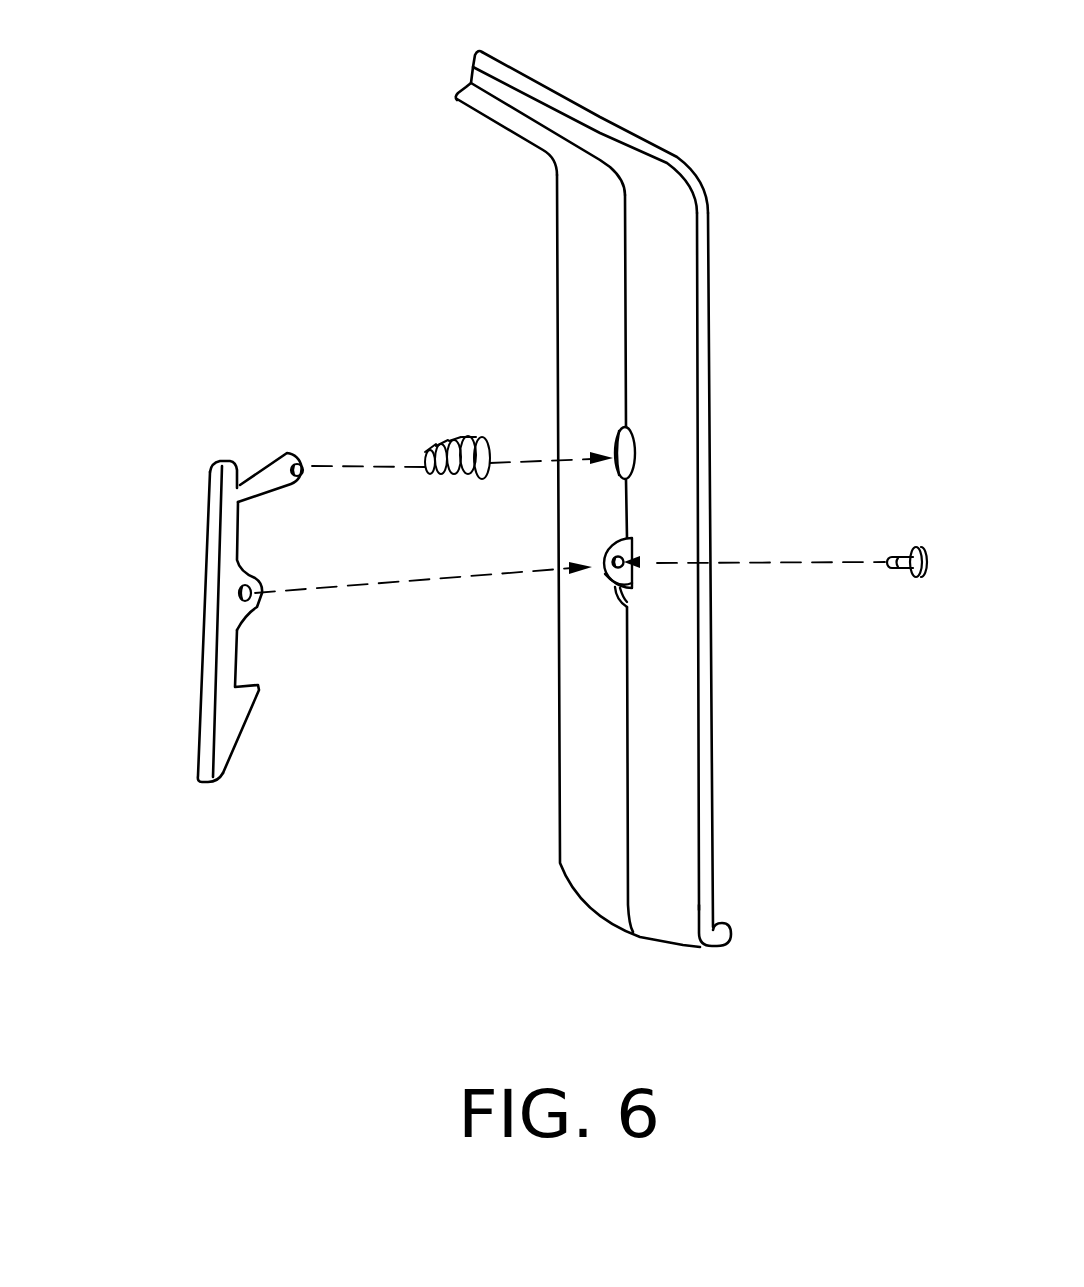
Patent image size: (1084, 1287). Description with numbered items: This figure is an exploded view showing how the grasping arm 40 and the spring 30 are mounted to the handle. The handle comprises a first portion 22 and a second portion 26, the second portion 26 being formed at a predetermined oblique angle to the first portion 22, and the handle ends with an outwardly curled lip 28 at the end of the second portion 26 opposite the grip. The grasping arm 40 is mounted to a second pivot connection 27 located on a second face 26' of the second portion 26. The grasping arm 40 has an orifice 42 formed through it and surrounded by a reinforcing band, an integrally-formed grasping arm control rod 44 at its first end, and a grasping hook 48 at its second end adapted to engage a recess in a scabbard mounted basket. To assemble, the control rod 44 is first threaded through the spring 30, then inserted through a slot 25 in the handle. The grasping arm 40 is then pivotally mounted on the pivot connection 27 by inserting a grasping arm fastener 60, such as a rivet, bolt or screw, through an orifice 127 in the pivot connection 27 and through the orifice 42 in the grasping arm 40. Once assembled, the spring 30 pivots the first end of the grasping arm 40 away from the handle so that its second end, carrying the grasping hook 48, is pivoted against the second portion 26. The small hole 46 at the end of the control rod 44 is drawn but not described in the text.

The first portion 22 is at (557, 92).
The second portion 26 is at (702, 561).
The second face 26' is at (661, 300).
The slot 25 is at (637, 453).
The second pivot connection 27 is at (627, 608).
The orifice 127 is at (603, 583).
The outwardly curled lip 28 is at (727, 923).
The spring 30 is at (448, 434).
The grasping arm 40 is at (189, 704).
The orifice 42 is at (253, 608).
The grasping arm control rod 44 is at (262, 470).
The spring hole in arm 46 is at (305, 477).
The grasping hook 48 is at (245, 728).
The grasping arm fastener 60 is at (921, 577).